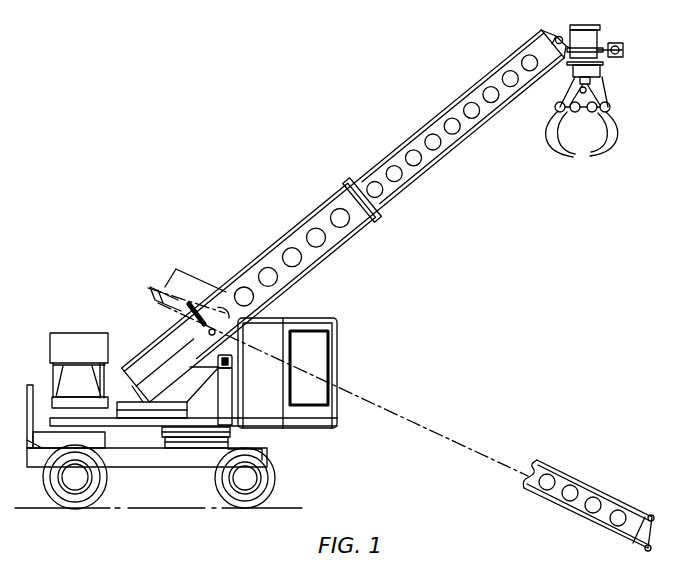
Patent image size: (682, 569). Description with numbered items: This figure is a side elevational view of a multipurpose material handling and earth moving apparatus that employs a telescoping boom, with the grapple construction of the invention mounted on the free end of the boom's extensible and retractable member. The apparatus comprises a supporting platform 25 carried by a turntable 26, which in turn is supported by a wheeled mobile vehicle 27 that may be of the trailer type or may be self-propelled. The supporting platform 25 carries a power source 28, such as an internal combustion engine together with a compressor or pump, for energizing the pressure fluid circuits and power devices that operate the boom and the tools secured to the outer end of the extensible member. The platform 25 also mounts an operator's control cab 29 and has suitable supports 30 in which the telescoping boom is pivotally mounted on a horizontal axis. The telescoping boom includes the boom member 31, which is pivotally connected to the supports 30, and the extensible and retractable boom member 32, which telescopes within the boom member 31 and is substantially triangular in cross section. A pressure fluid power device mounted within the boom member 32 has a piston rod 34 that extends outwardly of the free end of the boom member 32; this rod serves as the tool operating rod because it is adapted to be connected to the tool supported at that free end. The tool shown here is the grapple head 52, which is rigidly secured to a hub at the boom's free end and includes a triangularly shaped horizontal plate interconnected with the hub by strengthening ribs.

The supporting platform 25 is at (297, 425).
The turntable 26 is at (190, 447).
The wheeled mobile vehicle 27 is at (118, 459).
The power source 28 is at (101, 318).
The operator's control cab 29 is at (337, 353).
The supports 30 is at (226, 348).
The boom member 31 is at (244, 265).
The extensible and retractable boom member 32 is at (414, 182).
The piston rod 34 is at (560, 34).
The grapple head 52 is at (618, 67).